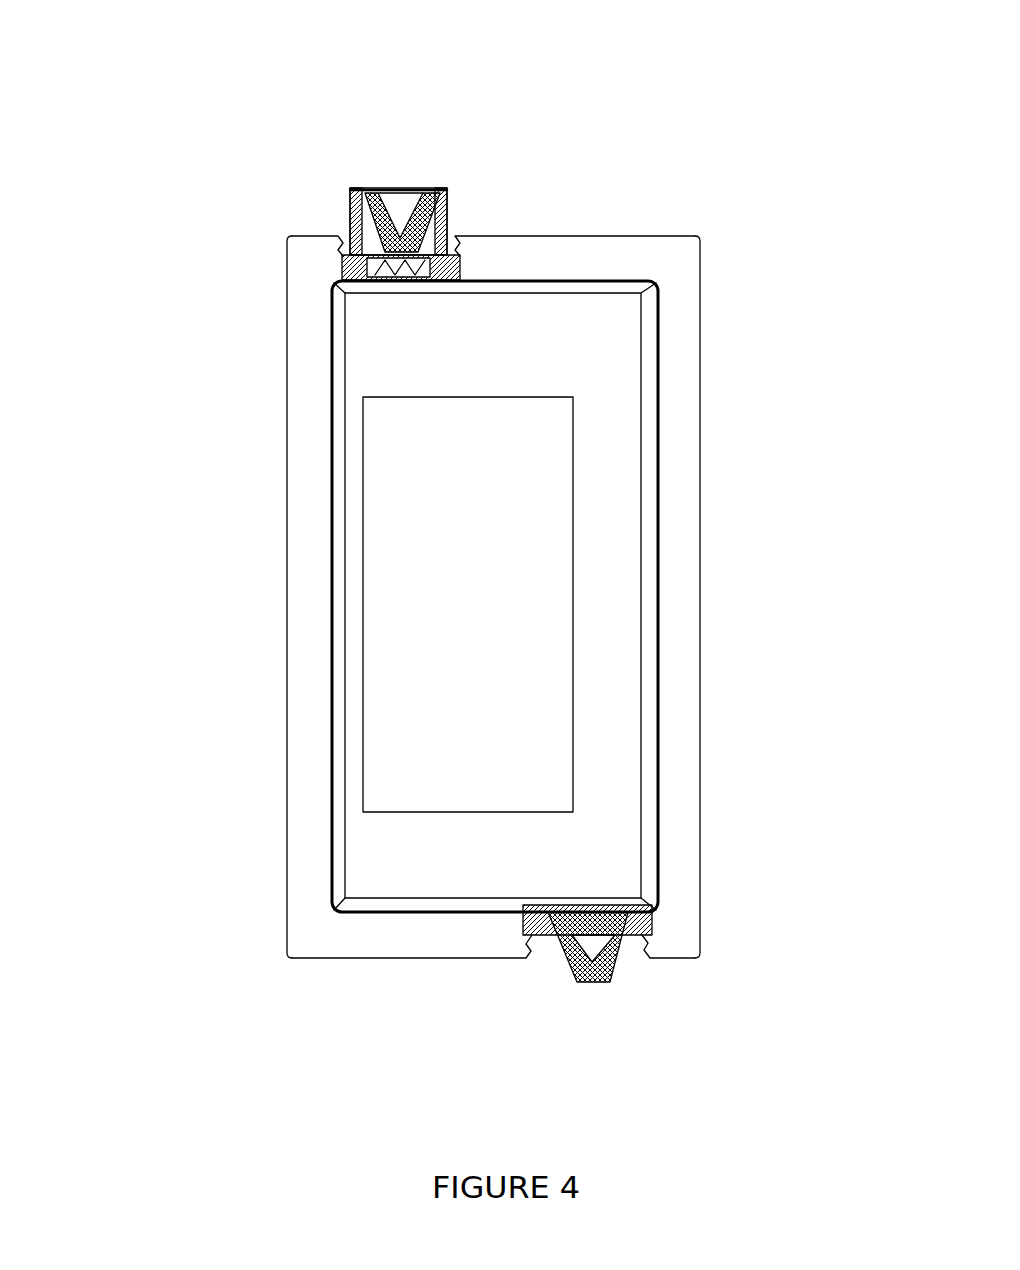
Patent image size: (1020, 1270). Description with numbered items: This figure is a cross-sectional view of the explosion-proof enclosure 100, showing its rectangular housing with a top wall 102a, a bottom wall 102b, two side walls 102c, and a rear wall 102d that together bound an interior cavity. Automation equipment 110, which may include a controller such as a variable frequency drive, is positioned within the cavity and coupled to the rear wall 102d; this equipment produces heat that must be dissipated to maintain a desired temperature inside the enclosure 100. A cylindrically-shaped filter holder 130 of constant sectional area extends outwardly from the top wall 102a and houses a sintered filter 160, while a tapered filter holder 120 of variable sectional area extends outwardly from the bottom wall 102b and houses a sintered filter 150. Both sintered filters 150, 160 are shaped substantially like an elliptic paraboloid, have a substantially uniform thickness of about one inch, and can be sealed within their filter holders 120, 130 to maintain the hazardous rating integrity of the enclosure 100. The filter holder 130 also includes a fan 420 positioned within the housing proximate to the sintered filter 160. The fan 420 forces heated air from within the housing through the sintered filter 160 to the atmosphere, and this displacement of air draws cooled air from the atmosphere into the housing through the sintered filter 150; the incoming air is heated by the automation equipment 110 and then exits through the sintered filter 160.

The explosion-proof enclosure 100 is at (200, 97).
The top wall 102a is at (612, 248).
The bottom wall 102b is at (415, 933).
The side walls 102c is at (302, 570).
The rear wall 102d is at (603, 432).
The automation equipment 110 is at (545, 580).
The filter holder 120 is at (548, 933).
The filter holder 130 is at (447, 215).
The sintered filter 150 is at (603, 980).
The sintered filter 160 is at (378, 192).
The fan 420 is at (450, 248).